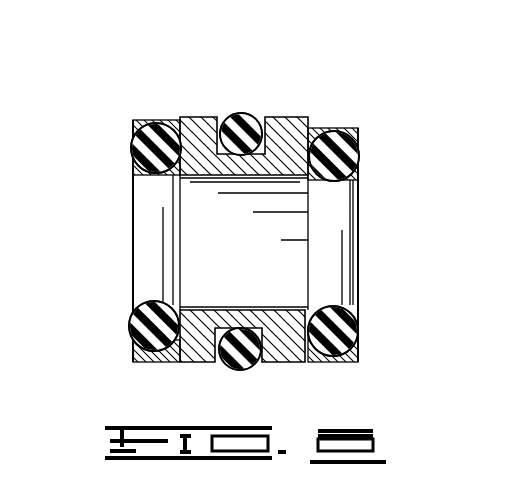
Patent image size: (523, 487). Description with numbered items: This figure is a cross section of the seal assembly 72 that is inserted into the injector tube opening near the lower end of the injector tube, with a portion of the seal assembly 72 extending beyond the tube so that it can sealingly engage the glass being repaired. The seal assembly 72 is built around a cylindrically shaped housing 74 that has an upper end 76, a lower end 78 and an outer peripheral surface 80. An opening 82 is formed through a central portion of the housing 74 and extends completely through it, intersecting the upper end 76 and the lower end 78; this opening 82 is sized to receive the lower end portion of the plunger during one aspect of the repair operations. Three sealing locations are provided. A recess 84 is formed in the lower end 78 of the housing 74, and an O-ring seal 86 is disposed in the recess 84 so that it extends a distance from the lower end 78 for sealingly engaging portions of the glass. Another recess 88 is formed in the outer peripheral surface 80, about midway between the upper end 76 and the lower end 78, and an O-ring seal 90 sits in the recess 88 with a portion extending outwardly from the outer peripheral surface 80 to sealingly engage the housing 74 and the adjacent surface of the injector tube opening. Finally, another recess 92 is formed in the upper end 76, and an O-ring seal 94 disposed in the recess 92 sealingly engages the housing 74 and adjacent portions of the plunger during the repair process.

The seal assembly 72 is at (297, 117).
The housing 74 is at (210, 127).
The upper end 76 is at (338, 122).
The lower end 78 is at (132, 120).
The outer peripheral surface 80 is at (283, 364).
The opening 82 is at (275, 307).
The recess 84 is at (136, 343).
The O-ring seal 86 is at (130, 146).
The recess 88 is at (230, 114).
The O-ring seal 90 is at (230, 358).
The recess 92 is at (352, 168).
The O-ring seal 94 is at (348, 326).